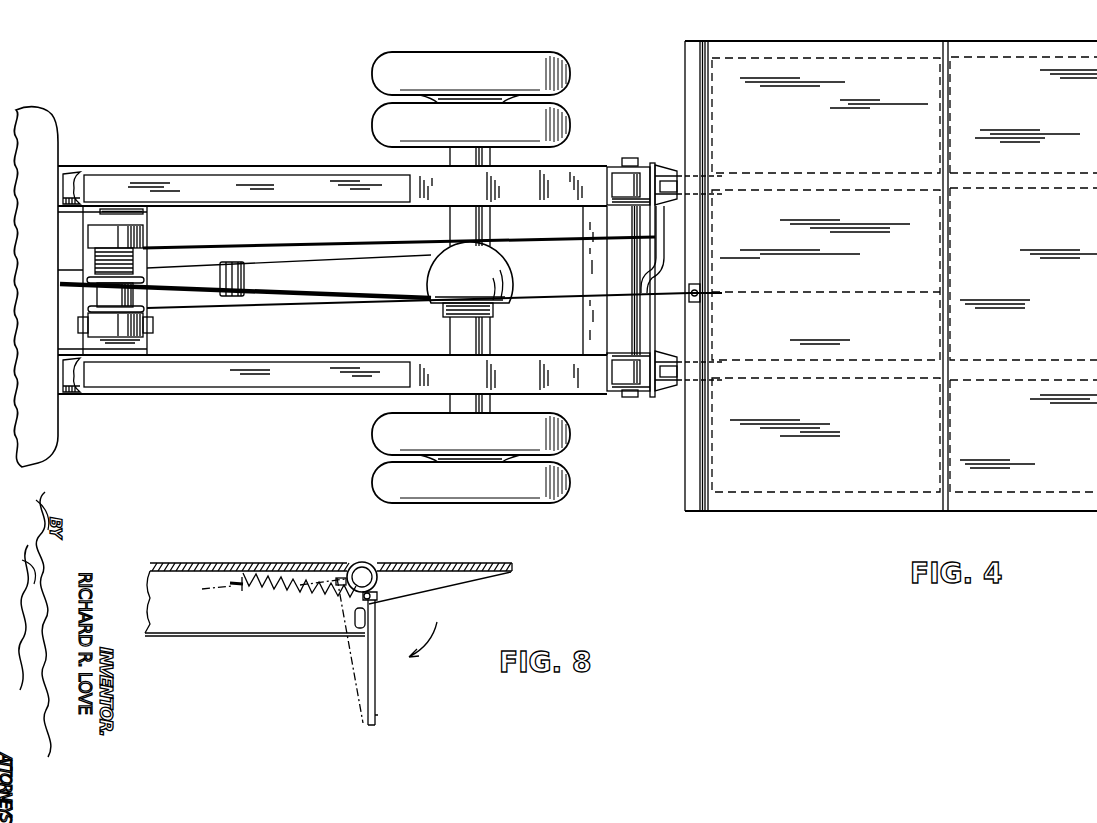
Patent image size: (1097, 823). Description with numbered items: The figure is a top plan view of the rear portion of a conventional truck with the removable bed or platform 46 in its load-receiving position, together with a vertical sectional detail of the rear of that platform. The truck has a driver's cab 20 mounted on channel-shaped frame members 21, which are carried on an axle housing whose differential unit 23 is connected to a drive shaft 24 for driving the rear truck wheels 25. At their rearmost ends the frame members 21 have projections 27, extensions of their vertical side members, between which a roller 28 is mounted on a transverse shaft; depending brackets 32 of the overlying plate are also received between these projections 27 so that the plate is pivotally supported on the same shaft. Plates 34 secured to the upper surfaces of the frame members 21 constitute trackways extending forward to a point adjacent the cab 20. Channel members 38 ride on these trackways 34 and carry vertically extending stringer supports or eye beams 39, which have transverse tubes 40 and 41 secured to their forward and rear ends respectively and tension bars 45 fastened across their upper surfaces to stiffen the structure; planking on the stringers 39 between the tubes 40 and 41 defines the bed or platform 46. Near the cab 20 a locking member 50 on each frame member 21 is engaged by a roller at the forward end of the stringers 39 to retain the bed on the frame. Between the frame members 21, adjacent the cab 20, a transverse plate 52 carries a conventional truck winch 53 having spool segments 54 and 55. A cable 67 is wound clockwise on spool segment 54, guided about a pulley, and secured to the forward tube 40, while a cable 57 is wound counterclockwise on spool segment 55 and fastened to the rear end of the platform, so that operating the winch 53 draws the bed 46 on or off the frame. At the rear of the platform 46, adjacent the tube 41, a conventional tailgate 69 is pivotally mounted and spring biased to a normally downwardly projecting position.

In FIG. 4, the driver's cab 20 is at (43, 133).
In FIG. 4, the channel-shaped frame members 21 is at (128, 170).
In FIG. 4, the plates or trackways 34 is at (202, 182).
In FIG. 4, the locking member 50 is at (66, 178).
In FIG. 4, the plate or platform 52 is at (137, 220).
In FIG. 4, the truck winch 53 is at (140, 240).
In FIG. 4, the spool segment 54 is at (134, 266).
In FIG. 4, the spool segment 55 is at (104, 300).
In FIG. 4, the cable 67 is at (328, 249).
In FIG. 4, the drive shaft 24 is at (299, 283).
In FIG. 4, the cable 57 is at (354, 302).
In FIG. 4, the differential unit 23 is at (447, 302).
In FIG. 4, the rear truck wheels 25 is at (390, 423).
In FIG. 4, the roller 28 is at (617, 178).
In FIG. 4, the projections 27 is at (610, 212).
In FIG. 4, the depending legs or brackets 32 is at (640, 395).
In FIG. 4, the tube 40 is at (702, 465).
In FIG. 4, the tension bars 45 is at (947, 128).
In FIG. 4, the stringer supports or eye beams 39 is at (1096, 204).
In FIG. 8, the stringer supports or eye beams 39 is at (214, 631).
In FIG. 4, the channel members 38 is at (1023, 274).
In FIG. 4, the bed or platform 46 is at (908, 428).
In FIG. 8, the bed or platform 46 is at (252, 545).
In FIG. 8, the tube 41 is at (356, 562).
In FIG. 8, the tailgate 69 is at (445, 545).